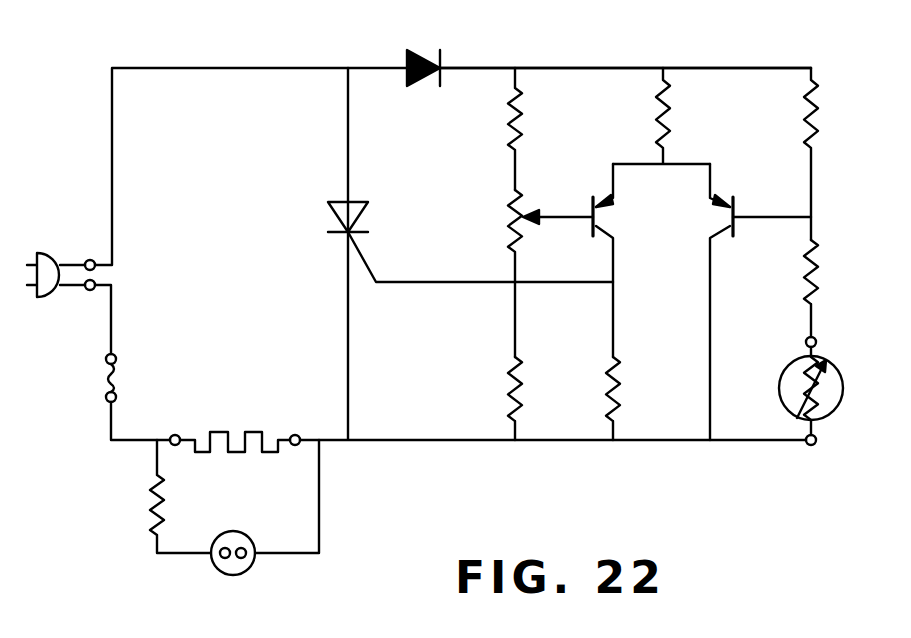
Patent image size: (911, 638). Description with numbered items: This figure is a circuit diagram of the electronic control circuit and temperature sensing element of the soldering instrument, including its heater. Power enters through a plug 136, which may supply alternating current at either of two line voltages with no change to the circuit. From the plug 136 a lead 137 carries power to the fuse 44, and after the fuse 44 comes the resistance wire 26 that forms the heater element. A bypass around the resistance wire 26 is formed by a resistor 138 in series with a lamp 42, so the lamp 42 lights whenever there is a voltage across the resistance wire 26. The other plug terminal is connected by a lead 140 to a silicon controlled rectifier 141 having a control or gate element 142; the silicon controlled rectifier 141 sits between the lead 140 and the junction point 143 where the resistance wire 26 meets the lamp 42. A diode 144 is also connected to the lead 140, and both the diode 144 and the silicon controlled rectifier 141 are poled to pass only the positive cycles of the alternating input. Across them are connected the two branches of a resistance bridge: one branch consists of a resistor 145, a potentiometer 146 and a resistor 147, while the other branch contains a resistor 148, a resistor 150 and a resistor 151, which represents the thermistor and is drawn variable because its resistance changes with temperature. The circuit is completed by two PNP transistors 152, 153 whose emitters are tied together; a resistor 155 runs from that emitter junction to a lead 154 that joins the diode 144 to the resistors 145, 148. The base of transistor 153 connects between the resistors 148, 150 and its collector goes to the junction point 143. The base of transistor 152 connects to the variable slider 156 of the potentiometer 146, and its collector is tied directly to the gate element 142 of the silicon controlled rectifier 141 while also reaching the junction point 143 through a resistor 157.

The plug 136 is at (37, 253).
The lead 137 is at (112, 318).
The lead 140 is at (113, 112).
The fuse 44 is at (114, 378).
The resistance wire 26 is at (218, 432).
The resistor 138 is at (165, 497).
The lamp 42 is at (228, 531).
The junction point 143 is at (321, 444).
The silicon controlled rectifier 141 is at (370, 208).
The control or gate element 142 is at (362, 258).
The diode 144 is at (407, 50).
The lead 154 is at (565, 68).
The resistor 145 is at (522, 122).
The potentiometer 146 is at (507, 210).
The variable slider 156 is at (547, 205).
The resistor 147 is at (522, 390).
The resistor 155 is at (669, 122).
The transistor 152 is at (610, 216).
The transistor 153 is at (707, 217).
The resistor 157 is at (620, 390).
The resistor 148 is at (817, 122).
The resistor 150 is at (818, 298).
The resistor 151 is at (826, 372).